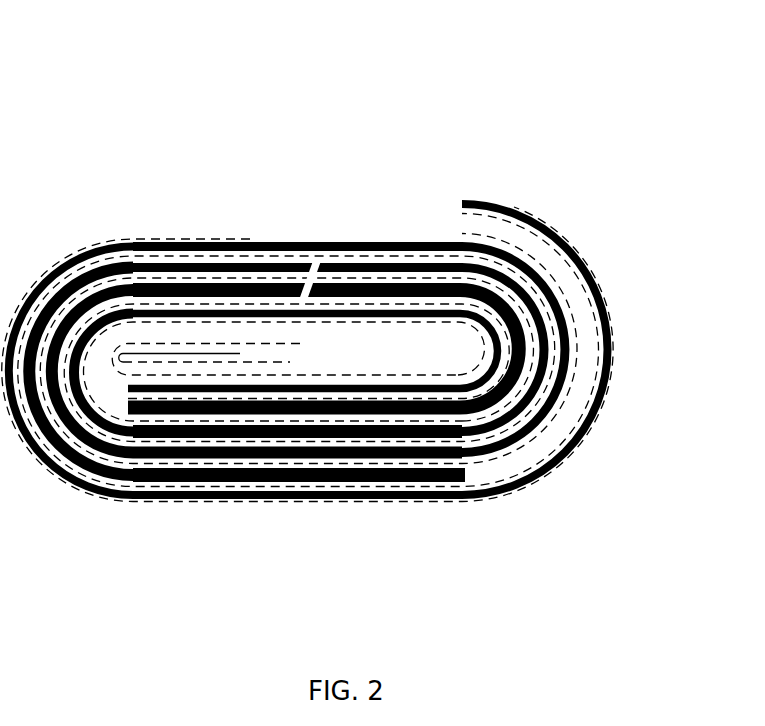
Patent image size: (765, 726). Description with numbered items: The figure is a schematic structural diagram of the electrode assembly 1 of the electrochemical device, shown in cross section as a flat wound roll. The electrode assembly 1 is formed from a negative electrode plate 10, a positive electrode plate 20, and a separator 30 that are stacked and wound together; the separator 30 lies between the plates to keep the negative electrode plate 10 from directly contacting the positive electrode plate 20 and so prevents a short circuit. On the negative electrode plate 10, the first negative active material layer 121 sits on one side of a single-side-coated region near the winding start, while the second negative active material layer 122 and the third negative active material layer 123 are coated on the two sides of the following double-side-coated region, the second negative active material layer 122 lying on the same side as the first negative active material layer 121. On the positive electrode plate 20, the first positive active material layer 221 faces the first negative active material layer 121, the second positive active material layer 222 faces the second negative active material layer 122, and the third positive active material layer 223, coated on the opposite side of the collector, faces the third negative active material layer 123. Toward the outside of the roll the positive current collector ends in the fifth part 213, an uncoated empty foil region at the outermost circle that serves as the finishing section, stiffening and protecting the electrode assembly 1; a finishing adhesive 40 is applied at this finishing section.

The electrode assembly 1 is at (259, 80).
The negative electrode plate 10 is at (503, 247).
The positive electrode plate 20 is at (392, 241).
The separator 30 is at (545, 285).
The finishing adhesive 40 is at (614, 382).
The first negative active material layer 121 is at (196, 372).
The second negative active material layer 122 is at (309, 449).
The third negative active material layer 123 is at (369, 440).
The fifth part 213 is at (618, 326).
The first positive active material layer 221 is at (262, 393).
The second positive active material layer 222 is at (232, 464).
The third positive active material layer 223 is at (426, 424).